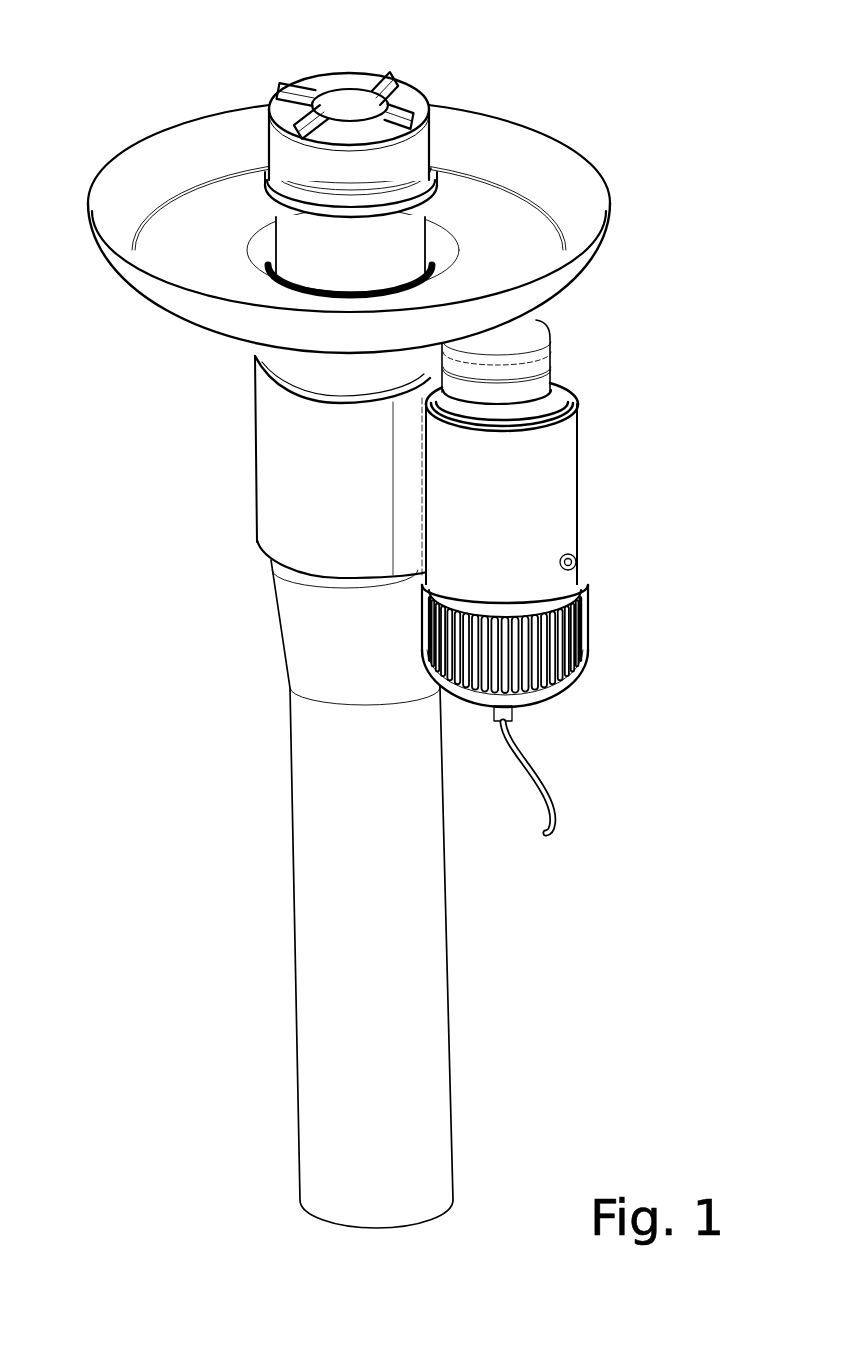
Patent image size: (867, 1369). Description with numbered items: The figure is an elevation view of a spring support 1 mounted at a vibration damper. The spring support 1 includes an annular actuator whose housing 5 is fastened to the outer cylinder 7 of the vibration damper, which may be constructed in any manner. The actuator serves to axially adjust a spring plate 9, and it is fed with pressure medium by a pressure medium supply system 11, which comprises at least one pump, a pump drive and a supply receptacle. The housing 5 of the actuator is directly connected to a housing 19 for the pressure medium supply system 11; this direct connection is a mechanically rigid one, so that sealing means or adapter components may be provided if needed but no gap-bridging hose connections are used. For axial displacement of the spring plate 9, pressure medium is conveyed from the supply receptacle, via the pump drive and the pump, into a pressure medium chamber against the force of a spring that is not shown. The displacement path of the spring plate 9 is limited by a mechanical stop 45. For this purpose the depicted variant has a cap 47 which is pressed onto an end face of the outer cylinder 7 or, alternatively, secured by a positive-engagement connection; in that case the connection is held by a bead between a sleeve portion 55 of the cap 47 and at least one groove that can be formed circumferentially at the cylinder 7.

The spring support 1 is at (414, 623).
The housing 5 is at (305, 515).
The outer cylinder 7 is at (352, 902).
The spring plate 9 is at (379, 213).
The pressure medium supply system 11 is at (589, 576).
The housing 19 is at (543, 505).
The mechanical stop 45 is at (440, 185).
The cap 47 is at (438, 140).
The sleeve portion 55 is at (379, 156).